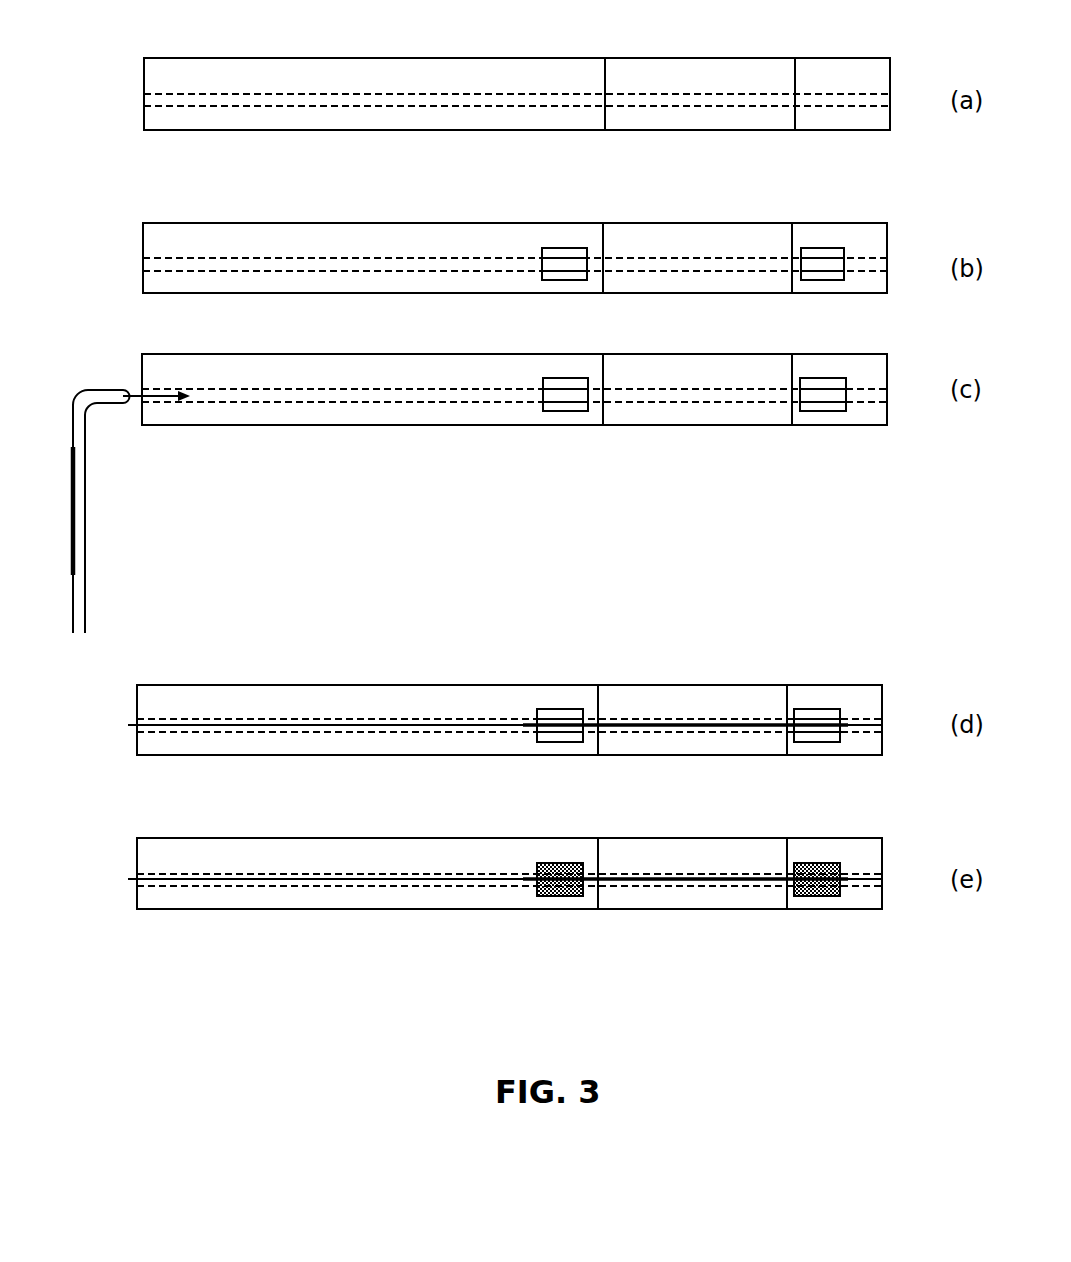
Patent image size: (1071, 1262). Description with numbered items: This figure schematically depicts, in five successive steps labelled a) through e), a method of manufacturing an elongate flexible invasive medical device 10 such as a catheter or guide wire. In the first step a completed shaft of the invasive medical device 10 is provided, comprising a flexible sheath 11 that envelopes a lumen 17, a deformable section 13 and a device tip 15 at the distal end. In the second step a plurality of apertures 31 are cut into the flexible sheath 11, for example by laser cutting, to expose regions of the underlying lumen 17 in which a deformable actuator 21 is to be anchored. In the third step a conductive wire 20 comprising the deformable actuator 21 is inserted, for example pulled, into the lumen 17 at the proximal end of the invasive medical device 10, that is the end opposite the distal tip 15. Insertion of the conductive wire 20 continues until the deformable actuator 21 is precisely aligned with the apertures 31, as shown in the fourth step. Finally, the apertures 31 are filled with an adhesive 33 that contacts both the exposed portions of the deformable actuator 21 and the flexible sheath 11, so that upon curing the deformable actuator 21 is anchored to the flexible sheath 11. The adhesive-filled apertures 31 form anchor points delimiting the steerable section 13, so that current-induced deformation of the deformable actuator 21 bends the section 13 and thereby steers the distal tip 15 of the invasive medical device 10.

The invasive medical device 10 is at (553, 1036).
The flexible sheath 11 is at (275, 125).
The deformable section 13 is at (697, 122).
The device tip 15 is at (842, 122).
The lumen 17 is at (430, 94).
The conductive wire 20 is at (85, 593).
The deformable actuator 21 is at (73, 506).
The aperture 31 is at (567, 276).
The adhesive 33 is at (557, 897).